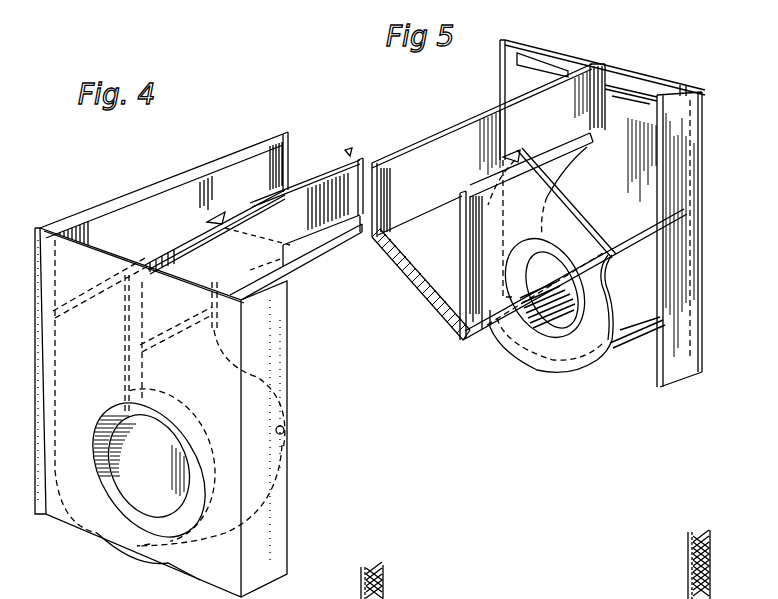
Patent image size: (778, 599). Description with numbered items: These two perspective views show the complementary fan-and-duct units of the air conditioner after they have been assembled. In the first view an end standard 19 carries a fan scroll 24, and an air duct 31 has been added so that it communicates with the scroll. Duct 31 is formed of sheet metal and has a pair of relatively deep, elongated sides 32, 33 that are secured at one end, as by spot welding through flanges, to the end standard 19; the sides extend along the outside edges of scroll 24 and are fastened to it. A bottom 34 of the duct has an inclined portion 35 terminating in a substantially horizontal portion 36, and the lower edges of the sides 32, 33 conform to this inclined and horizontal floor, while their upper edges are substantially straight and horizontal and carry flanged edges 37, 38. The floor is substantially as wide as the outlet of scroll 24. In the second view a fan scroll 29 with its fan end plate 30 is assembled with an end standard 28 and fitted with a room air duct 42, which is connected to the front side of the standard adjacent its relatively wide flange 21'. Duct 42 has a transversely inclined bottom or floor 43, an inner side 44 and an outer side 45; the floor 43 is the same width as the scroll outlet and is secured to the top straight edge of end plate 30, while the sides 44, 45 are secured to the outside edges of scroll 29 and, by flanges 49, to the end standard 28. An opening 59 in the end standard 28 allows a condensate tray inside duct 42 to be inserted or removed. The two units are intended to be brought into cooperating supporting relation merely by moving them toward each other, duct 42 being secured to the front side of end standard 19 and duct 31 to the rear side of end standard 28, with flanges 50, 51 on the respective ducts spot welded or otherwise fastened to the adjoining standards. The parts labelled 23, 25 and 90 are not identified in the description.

In FIG. 4, the end standard 19 is at (56, 276).
In FIG. 5, the relatively wide flange 21' is at (683, 239).
In FIG. 4, the inlet opening 23 is at (197, 468).
In FIG. 4, the fan scroll 24 is at (283, 428).
In FIG. 4, the scroll outline 25 is at (272, 398).
In FIG. 5, the end standard 28 is at (682, 47).
In FIG. 5, the fan scroll 29 is at (619, 333).
In FIG. 5, the fan end plate 30 is at (579, 368).
In FIG. 4, the air duct 31 is at (205, 149).
In FIG. 4, the side 32 is at (252, 141).
In FIG. 4, the side 33 is at (338, 185).
In FIG. 4, the bottom 34 is at (275, 197).
In FIG. 4, the inclined portion 35 is at (271, 267).
In FIG. 4, the horizontal portion 36 is at (323, 238).
In FIG. 4, the flanged edge 37 is at (363, 158).
In FIG. 4, the flanged edge 38 is at (268, 140).
In FIG. 5, the room air duct 42 is at (463, 113).
In FIG. 5, the bottom or floor 43 is at (425, 268).
In FIG. 5, the inner side 44 is at (425, 150).
In FIG. 5, the outer side 45 is at (493, 312).
In FIG. 5, the flanges 49 is at (600, 75).
In FIG. 4, the flange 50 is at (286, 144).
In FIG. 5, the flange 51 is at (378, 198).
In FIG. 5, the opening 59 is at (632, 93).
In FIG. 5, the wall section 90 is at (733, 591).